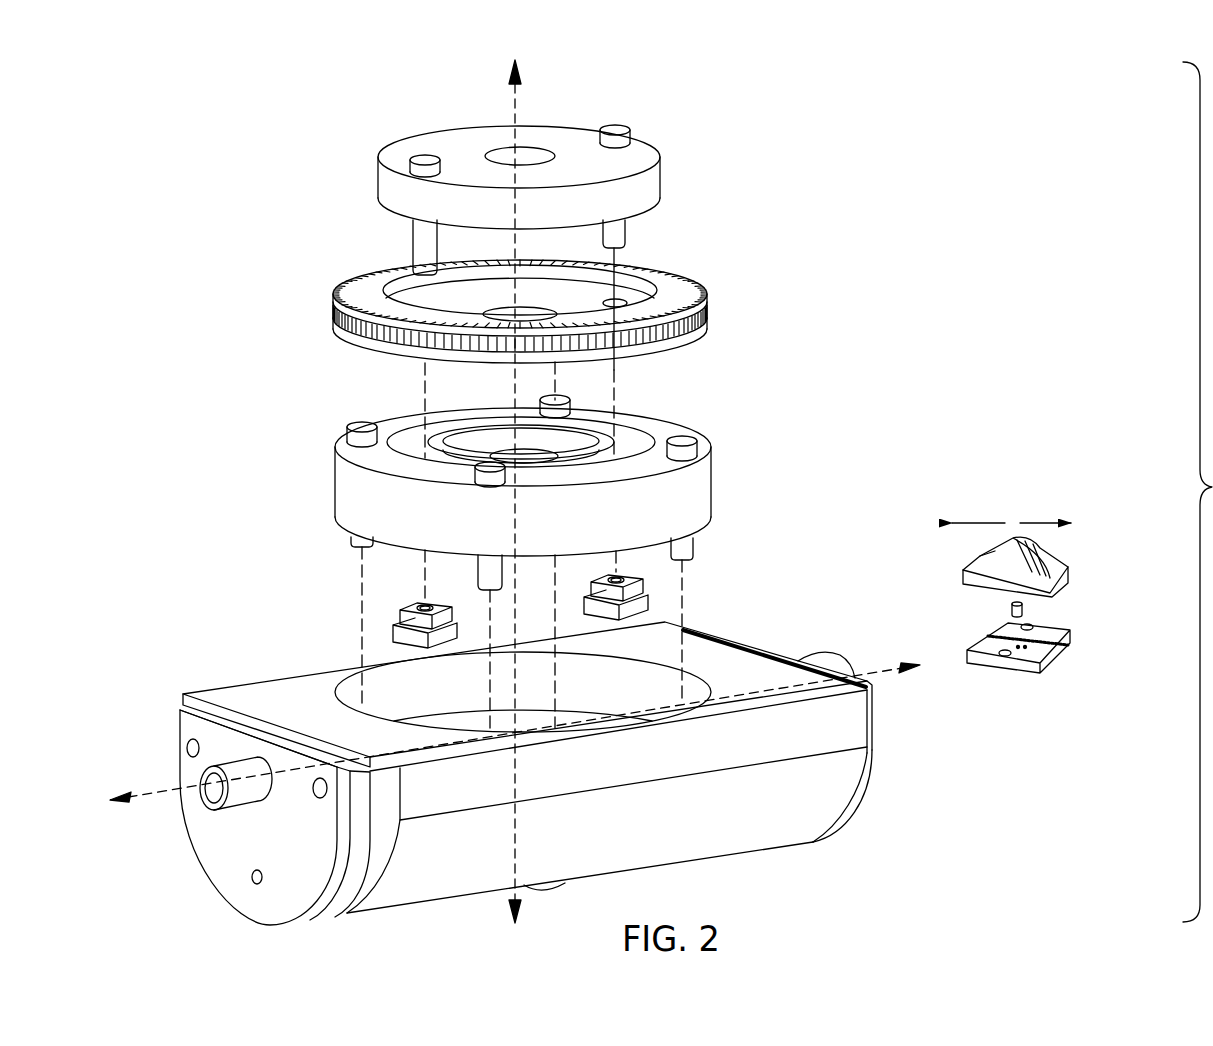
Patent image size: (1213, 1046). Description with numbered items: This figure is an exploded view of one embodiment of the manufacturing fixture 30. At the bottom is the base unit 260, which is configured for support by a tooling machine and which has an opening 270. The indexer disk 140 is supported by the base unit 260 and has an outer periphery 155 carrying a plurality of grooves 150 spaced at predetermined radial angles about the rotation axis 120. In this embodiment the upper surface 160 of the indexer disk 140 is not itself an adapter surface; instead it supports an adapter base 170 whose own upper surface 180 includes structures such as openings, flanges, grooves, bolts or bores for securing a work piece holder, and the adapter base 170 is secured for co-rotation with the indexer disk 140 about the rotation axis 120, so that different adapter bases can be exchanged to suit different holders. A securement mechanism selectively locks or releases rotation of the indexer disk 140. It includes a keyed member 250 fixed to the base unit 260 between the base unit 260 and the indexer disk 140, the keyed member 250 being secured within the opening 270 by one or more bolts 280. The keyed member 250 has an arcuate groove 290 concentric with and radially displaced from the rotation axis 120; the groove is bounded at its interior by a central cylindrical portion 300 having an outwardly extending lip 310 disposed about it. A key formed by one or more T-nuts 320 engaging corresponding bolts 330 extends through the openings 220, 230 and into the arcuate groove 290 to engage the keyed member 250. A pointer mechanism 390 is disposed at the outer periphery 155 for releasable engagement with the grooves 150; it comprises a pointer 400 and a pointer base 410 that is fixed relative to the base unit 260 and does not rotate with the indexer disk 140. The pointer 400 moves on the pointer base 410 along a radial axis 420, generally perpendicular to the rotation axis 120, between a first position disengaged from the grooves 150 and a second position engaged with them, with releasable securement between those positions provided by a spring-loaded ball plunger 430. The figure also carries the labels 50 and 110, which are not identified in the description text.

The manufacturing fixture 30 is at (206, 224).
The base housing 50 is at (517, 748).
The horizontal axis 110 is at (881, 659).
The rotation axis 120 is at (519, 99).
The indexer disk 140 is at (542, 291).
The grooves 150 is at (699, 326).
The outer periphery 155 is at (683, 279).
The upper surface 160 is at (396, 308).
The adapter base 170 is at (532, 230).
The upper surface 180 is at (432, 137).
The opening 220 is at (618, 298).
The opening 230 is at (636, 150).
The keyed member 250 is at (540, 475).
The base unit 260 is at (740, 632).
The opening 270 is at (372, 683).
The bolts 280 is at (571, 402).
The arcuate groove 290 is at (623, 438).
The central cylindrical portion 300 is at (483, 448).
The outwardly extending lip 310 is at (427, 448).
The T-nuts 320 is at (407, 613).
The bolts 330 is at (626, 229).
The pointer mechanism 390 is at (1056, 567).
The pointer 400 is at (1069, 580).
The pointer base 410 is at (1053, 644).
The radial axis 420 is at (1037, 521).
The spring-loaded ball plunger 430 is at (1010, 607).